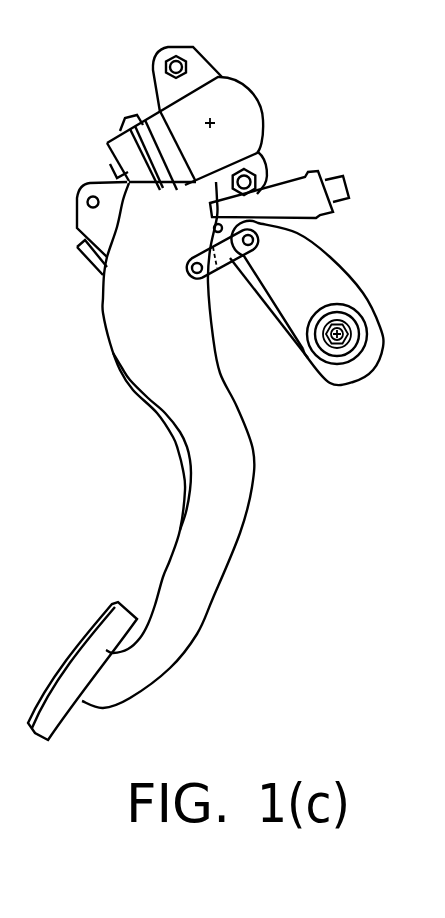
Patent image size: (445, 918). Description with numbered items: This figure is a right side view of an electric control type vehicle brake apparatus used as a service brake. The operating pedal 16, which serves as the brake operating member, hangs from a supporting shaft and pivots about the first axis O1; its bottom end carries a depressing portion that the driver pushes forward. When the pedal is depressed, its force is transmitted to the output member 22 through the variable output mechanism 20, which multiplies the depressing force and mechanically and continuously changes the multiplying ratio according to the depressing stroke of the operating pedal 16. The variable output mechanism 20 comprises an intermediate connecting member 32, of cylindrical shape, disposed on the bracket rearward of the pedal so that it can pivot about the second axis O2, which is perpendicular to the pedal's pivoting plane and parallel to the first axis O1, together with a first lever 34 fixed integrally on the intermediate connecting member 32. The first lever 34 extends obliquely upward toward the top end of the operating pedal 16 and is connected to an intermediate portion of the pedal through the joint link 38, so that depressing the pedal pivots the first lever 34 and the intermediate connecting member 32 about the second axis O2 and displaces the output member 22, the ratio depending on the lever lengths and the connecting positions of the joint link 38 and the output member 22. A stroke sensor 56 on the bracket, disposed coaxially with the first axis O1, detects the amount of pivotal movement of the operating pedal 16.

The operating pedal 16 is at (210, 497).
The stroke sensor 56 is at (252, 116).
The first axis O1 is at (214, 121).
The output member 22 is at (308, 182).
The first lever 34 is at (330, 266).
The intermediate connecting member 32 is at (362, 343).
The second axis O2 is at (347, 327).
The joint link 38 is at (233, 240).
The variable output mechanism 20 is at (356, 393).